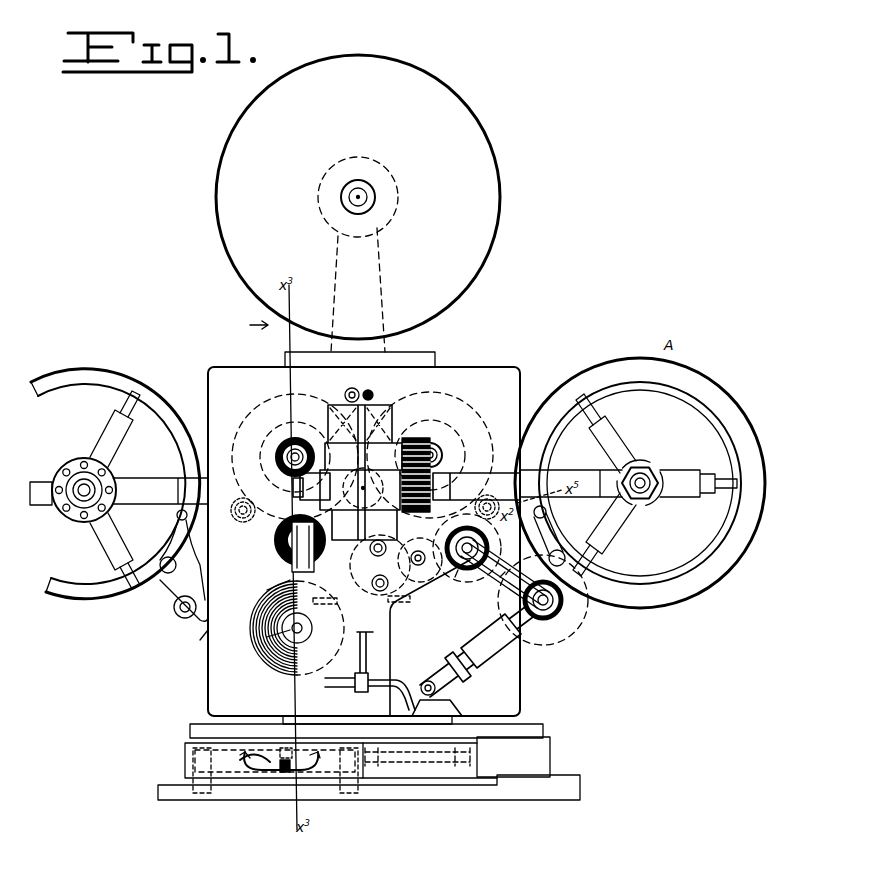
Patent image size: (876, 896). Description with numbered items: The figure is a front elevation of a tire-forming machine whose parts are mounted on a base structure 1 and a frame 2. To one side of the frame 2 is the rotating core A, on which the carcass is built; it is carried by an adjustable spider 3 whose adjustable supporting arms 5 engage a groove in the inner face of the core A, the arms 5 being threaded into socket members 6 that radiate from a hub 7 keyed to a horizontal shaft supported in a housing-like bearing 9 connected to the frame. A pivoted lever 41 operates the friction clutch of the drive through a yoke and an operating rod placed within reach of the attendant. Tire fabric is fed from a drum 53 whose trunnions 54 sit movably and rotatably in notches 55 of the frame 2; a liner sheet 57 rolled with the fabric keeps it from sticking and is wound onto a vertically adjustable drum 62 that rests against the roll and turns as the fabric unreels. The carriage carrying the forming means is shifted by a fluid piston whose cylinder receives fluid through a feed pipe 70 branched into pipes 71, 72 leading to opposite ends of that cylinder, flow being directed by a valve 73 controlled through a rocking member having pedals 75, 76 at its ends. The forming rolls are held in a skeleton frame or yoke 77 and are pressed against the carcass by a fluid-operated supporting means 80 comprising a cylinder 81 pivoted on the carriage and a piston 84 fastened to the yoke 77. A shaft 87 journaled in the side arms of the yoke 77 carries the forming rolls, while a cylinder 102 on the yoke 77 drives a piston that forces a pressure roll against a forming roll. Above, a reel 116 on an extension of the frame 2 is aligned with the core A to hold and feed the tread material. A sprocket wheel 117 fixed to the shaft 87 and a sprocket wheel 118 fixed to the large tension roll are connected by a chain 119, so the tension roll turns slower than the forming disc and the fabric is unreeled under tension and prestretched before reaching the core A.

The base structure 1 is at (552, 748).
The frame 2 is at (381, 648).
The spider 3 is at (647, 462).
The adjustable supporting arms 5 is at (125, 572).
The socket members 6 is at (103, 540).
The hub 7 is at (662, 510).
The bearing 9 is at (119, 484).
The pivoted lever 41 is at (265, 533).
The drum 53 is at (283, 639).
The trunnions 54 is at (307, 637).
The notches 55 is at (267, 637).
The liner sheet or strip 57 is at (290, 562).
The drum 62 is at (267, 590).
The feed pipe 70 is at (287, 783).
The pipe 71 is at (337, 772).
The pipe 72 is at (232, 785).
The valve 73 is at (283, 780).
The pedal 75 is at (318, 750).
The pedal 76 is at (247, 757).
The skeleton frame or yoke 77 is at (475, 660).
The fluid-operated supporting means 80 is at (480, 553).
The cylinder 81 is at (439, 699).
The piston 84 is at (476, 654).
The shaft 87 is at (557, 643).
The cylinder 102 is at (558, 550).
The reel or drum 116 is at (483, 215).
The sprocket wheel 117 is at (567, 637).
The sprocket wheel 118 is at (488, 577).
The chain 119 is at (500, 577).
The rotating core A is at (640, 483).